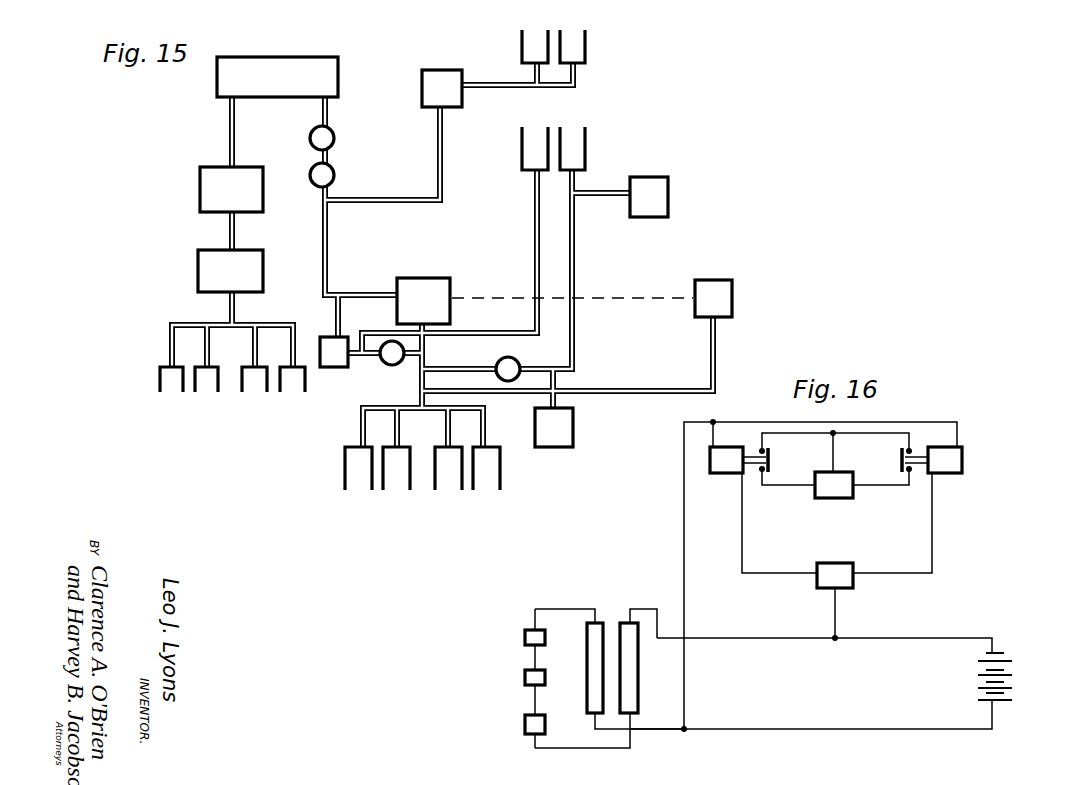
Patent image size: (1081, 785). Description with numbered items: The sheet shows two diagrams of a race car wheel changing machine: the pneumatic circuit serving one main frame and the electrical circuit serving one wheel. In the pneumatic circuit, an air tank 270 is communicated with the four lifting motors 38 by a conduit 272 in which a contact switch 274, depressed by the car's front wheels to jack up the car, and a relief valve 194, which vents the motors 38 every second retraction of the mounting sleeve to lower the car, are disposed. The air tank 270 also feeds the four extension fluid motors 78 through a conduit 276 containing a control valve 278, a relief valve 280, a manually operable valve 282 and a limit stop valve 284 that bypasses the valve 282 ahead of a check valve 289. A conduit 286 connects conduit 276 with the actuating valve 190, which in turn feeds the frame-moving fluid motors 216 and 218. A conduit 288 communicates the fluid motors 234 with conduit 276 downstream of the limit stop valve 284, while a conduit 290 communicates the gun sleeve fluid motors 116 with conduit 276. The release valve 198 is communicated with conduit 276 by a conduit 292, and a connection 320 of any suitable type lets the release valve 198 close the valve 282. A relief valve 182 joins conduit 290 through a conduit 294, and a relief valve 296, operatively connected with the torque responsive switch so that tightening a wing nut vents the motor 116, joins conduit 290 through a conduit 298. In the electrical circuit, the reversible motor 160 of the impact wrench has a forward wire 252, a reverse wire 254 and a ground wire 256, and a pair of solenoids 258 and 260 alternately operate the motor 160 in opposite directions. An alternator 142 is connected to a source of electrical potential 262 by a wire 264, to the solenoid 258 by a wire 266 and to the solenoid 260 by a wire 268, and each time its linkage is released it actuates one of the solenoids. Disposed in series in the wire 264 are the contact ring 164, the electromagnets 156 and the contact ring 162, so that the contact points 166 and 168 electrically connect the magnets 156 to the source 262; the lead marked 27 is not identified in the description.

In FIG. 15, the air tank 270 is at (341, 86).
In FIG. 15, the control valve 278 is at (333, 133).
In FIG. 15, the relief valve 280 is at (334, 176).
In FIG. 15, the conduit 286 is at (403, 196).
In FIG. 15, the actuating valve 190 is at (432, 78).
In FIG. 15, the fluid motor 218 is at (519, 48).
In FIG. 15, the fluid motor 216 is at (586, 53).
In FIG. 15, the extensible fluid motor 234 is at (518, 150).
In FIG. 15, the fluid motor 116 is at (589, 157).
In FIG. 15, the relief valve 182 is at (648, 201).
In FIG. 15, the contact switch 274 is at (207, 181).
In FIG. 15, the relief valve 194 is at (212, 263).
In FIG. 15, the conduit 272 is at (229, 317).
In FIG. 15, the extensible motors 38 is at (206, 382).
In FIG. 15, the conduit 276 is at (330, 254).
In FIG. 15, the manually operable valve 282 is at (424, 290).
In FIG. 15, the limit stop valve 284 is at (336, 360).
In FIG. 15, the check valve 289 is at (386, 365).
In FIG. 15, the conduit 288 is at (533, 224).
In FIG. 15, the conduit 294 is at (596, 197).
In FIG. 15, the conduit 290 is at (576, 272).
In FIG. 15, the connection 320 is at (650, 294).
In FIG. 15, the release valve 198 is at (731, 314).
In FIG. 15, the conduit 292 is at (503, 366).
In FIG. 15, the conduit 298 is at (556, 370).
In FIG. 15, the relief valve 296 is at (574, 432).
In FIG. 15, the extensible fluid motor 78 is at (363, 474).
In FIG. 16, the solenoid 260 is at (728, 444).
In FIG. 16, the solenoid 258 is at (948, 474).
In FIG. 16, the ground wire 256 is at (833, 458).
In FIG. 16, the reverse wire 254 is at (782, 488).
In FIG. 16, the forward wire 252 is at (887, 490).
In FIG. 16, the motor 160 is at (838, 492).
In FIG. 16, the wire 268 is at (740, 532).
In FIG. 16, the wire 266 is at (933, 548).
In FIG. 16, the alternator 142 is at (814, 586).
In FIG. 16, the wire 264 is at (911, 637).
In FIG. 16, the source of electrical potential 262 is at (1012, 692).
In FIG. 16, the conductor 27 is at (683, 552).
In FIG. 16, the contact point 168 is at (628, 625).
In FIG. 16, the electromagnet 156 is at (524, 637).
In FIG. 16, the contact ring 162 is at (592, 660).
In FIG. 16, the contact ring 164 is at (632, 683).
In FIG. 16, the contact point 166 is at (592, 715).